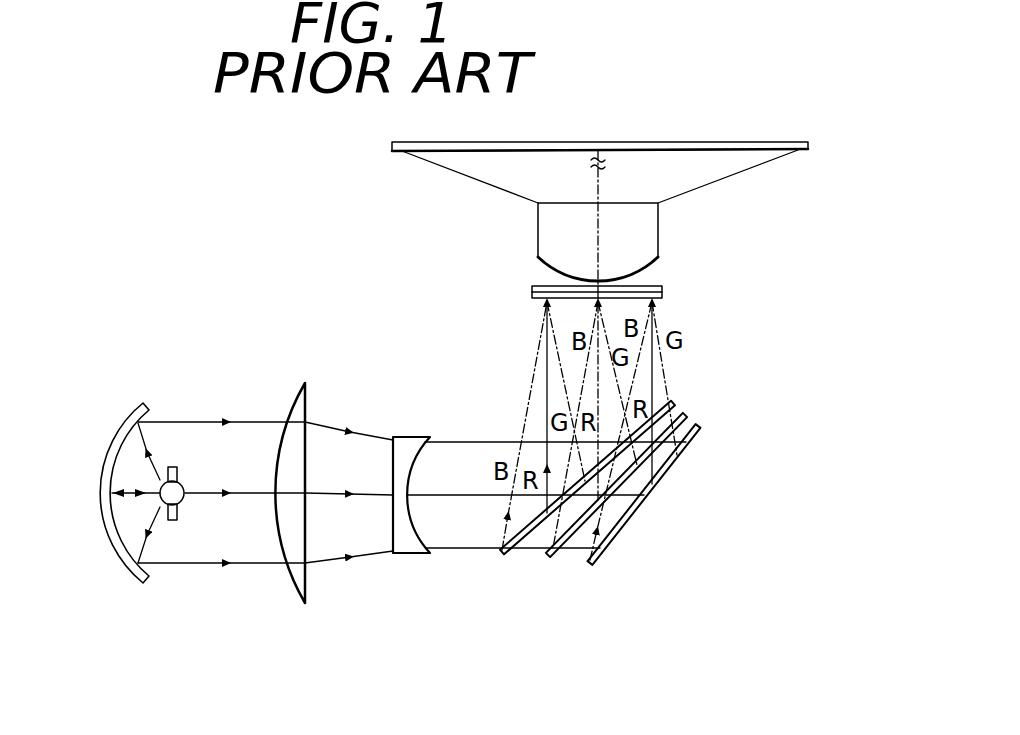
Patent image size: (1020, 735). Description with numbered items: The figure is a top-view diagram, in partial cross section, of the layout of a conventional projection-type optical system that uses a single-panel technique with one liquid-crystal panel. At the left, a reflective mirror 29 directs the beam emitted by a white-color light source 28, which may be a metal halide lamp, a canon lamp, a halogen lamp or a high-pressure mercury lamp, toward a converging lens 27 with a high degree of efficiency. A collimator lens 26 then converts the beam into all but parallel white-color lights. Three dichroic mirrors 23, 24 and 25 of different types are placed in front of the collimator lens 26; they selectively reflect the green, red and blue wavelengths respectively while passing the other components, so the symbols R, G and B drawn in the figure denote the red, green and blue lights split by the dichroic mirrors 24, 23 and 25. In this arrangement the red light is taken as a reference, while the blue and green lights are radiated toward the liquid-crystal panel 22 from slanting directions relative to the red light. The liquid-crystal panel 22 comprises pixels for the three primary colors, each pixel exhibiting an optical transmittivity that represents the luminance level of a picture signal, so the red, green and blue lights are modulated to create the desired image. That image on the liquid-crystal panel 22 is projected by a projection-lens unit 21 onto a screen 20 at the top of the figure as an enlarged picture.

The screen 20 is at (421, 148).
The projection-lens unit 21 is at (550, 237).
The liquid-crystal panel 22 is at (532, 296).
The dichroic mirror 23 is at (592, 566).
The dichroic mirror 24 is at (549, 557).
The dichroic mirror 25 is at (503, 555).
The collimator lens 26 is at (410, 554).
The converging lens 27 is at (299, 597).
The white-color light source 28 is at (176, 513).
The reflective mirror 29 is at (130, 565).